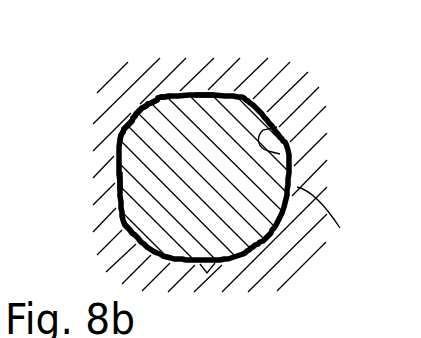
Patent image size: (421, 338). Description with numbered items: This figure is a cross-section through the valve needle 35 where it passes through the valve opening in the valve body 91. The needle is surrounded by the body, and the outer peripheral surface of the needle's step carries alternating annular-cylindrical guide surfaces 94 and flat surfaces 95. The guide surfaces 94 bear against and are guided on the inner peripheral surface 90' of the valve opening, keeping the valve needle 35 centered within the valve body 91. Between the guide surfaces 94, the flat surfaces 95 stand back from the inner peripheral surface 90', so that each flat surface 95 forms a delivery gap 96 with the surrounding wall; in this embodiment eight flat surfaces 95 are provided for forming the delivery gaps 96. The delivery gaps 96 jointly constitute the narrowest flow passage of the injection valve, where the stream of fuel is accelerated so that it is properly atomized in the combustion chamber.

The valve needle 35 is at (205, 142).
The inner peripheral surface 90' is at (248, 177).
The valve body 91 is at (274, 94).
The annular-cylindrical guide surfaces 94 is at (122, 142).
The flat surfaces 95 is at (264, 240).
The delivery gaps 96 is at (203, 94).